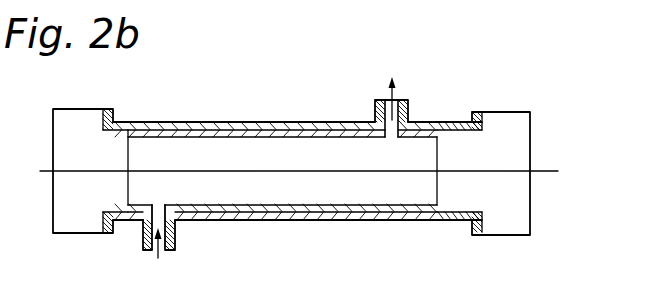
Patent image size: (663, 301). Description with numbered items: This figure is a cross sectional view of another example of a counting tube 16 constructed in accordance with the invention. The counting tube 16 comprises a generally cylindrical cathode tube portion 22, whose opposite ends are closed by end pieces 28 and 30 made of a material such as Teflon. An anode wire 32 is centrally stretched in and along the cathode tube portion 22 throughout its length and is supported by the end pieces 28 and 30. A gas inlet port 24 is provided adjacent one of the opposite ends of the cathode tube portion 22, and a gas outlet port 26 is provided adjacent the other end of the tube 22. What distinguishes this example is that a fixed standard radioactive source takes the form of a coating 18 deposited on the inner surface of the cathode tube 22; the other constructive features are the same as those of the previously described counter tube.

The counting tube 16 is at (139, 117).
The standard radioactive source coating 18 is at (314, 133).
The cathode tube portion 22 is at (237, 122).
The gas inlet port 24 is at (146, 240).
The gas outlet port 26 is at (412, 113).
The end piece 28 is at (72, 116).
The end piece 30 is at (517, 113).
The anode wire 32 is at (545, 171).